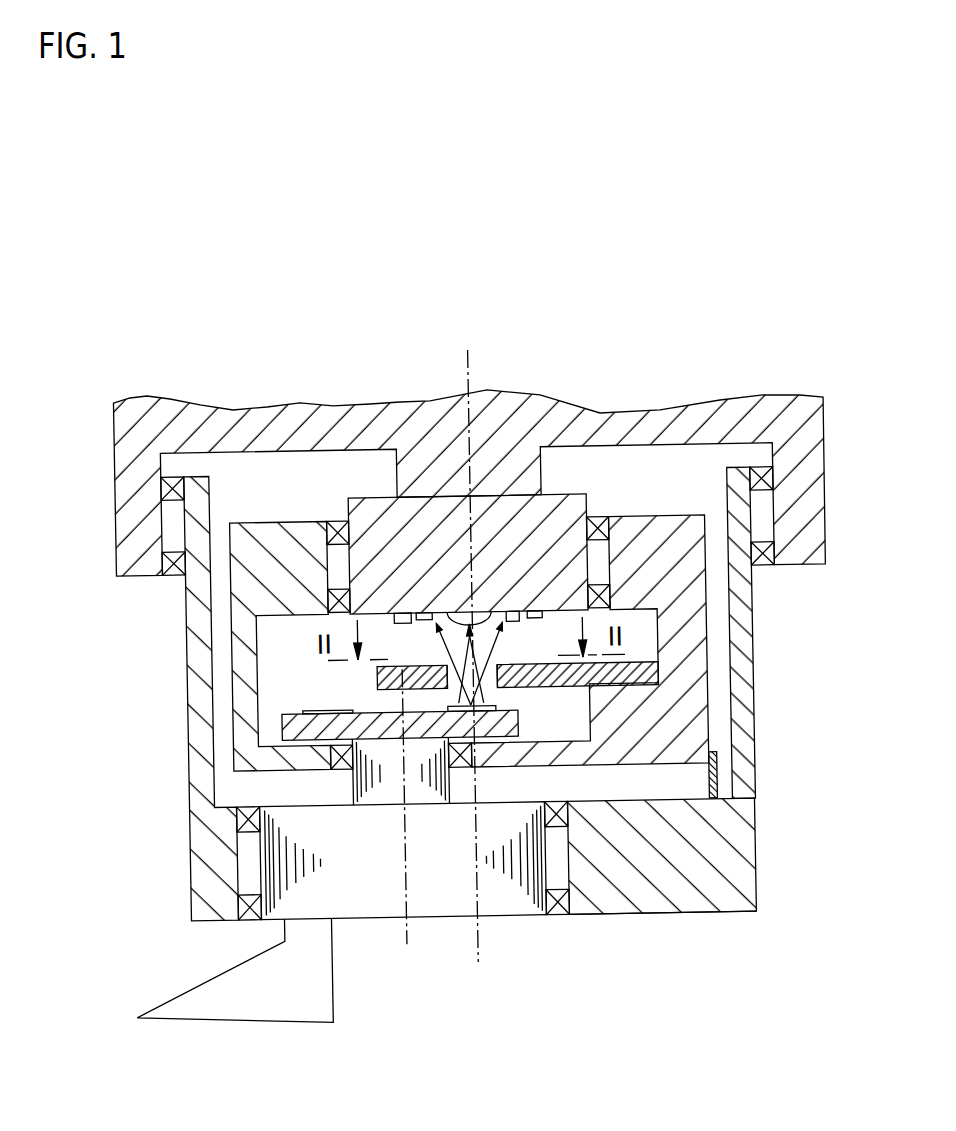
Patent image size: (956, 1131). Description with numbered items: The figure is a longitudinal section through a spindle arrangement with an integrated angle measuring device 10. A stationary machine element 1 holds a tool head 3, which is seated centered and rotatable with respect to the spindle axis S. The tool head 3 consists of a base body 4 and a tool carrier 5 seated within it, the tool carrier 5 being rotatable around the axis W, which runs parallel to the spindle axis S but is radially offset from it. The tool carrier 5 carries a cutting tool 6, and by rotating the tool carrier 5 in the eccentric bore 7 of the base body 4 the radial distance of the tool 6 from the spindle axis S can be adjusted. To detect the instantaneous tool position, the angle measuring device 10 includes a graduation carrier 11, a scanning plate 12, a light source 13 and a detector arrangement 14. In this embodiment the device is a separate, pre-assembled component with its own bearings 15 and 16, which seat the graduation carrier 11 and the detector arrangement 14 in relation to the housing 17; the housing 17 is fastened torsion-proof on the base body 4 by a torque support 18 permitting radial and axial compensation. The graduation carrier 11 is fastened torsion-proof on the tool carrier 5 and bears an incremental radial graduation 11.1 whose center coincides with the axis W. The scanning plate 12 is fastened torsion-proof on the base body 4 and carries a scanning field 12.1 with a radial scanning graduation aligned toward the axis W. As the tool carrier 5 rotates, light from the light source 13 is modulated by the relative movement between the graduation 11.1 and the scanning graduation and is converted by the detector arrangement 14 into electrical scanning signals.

The stationary machine element 1 is at (810, 529).
The tool head 3 is at (781, 894).
The base body 4 is at (719, 916).
The tool carrier 5 is at (506, 903).
The cutting tool 6 is at (211, 994).
The eccentric bore 7 is at (554, 860).
The angle measuring device 10 is at (655, 508).
The graduation carrier 11 is at (279, 717).
The incremental radial graduation 11.1 is at (304, 694).
The scanning plate 12 is at (627, 671).
The scanning field 12.1 is at (495, 683).
The light source 13 is at (481, 605).
The detector arrangement 14 is at (513, 606).
The bearing 15 is at (345, 518).
The bearing 16 is at (288, 765).
The housing 17 is at (253, 596).
The torque support 18 is at (715, 775).
The spindle axis S is at (472, 938).
The tool carrier axis W is at (399, 932).